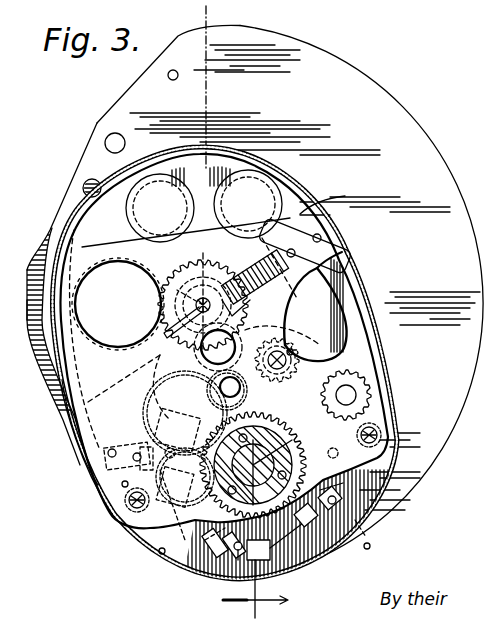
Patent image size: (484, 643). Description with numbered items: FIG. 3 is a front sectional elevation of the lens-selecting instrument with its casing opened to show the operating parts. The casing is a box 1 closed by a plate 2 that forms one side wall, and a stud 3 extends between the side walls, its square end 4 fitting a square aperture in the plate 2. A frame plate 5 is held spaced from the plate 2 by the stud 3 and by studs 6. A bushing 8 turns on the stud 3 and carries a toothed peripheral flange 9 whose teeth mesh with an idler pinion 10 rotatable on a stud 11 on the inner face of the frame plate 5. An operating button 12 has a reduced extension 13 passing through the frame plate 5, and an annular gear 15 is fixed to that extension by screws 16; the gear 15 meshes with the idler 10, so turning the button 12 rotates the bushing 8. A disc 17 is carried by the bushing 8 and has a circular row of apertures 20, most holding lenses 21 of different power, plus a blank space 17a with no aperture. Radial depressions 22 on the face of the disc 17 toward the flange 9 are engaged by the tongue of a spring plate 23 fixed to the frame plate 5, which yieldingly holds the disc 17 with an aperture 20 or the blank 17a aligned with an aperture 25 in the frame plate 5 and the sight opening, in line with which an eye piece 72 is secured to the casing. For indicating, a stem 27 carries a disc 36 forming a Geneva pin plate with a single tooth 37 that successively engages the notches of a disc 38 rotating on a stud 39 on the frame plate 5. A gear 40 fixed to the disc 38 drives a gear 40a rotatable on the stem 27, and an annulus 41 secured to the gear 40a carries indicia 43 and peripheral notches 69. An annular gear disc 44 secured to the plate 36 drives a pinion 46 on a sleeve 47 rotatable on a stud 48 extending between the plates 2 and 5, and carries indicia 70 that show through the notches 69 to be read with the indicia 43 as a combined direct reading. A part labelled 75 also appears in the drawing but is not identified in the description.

The box 1 is at (92, 466).
The plate 2 is at (433, 172).
The stud 3 is at (220, 300).
The square end 4 is at (255, 617).
The frame plate 5 is at (123, 486).
The studs 6 is at (133, 510).
The bushing 8 is at (236, 551).
The peripheral flange 9 is at (33, 310).
The idler pinion 10 is at (185, 413).
The stud 11 is at (226, 391).
The operating button 12 is at (213, 550).
The extension of reduced diameter 13 is at (232, 556).
The annular gear 15 is at (187, 540).
The screws 16 is at (212, 447).
The disc 17 is at (299, 207).
The blank space 17a is at (82, 440).
The apertures 20 is at (211, 306).
The lenses 21 is at (204, 206).
The radially extending grooves or depressions 22 is at (203, 301).
The spring plate 23 is at (300, 214).
The aperture 25 is at (108, 342).
The stem 27 is at (300, 402).
The disc 36 is at (164, 432).
The single tooth 37 is at (170, 402).
The notched disc 38 is at (366, 322).
The stud 39 is at (290, 352).
The gear 40 is at (285, 335).
The gear 40a is at (366, 537).
The annulus or disc 41 is at (160, 553).
The indicating indicia 43 is at (238, 560).
The annular gear disc 44 is at (205, 540).
The pinion 46 is at (352, 373).
The sleeve 47 is at (365, 365).
The stud 48 is at (357, 395).
The notches 69 is at (348, 550).
The indicia 70 is at (272, 589).
The eye piece 72 is at (43, 236).
The block 75 is at (277, 540).